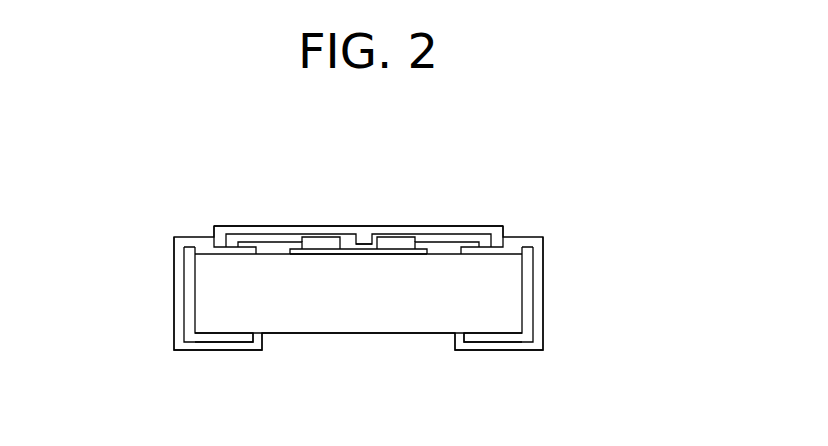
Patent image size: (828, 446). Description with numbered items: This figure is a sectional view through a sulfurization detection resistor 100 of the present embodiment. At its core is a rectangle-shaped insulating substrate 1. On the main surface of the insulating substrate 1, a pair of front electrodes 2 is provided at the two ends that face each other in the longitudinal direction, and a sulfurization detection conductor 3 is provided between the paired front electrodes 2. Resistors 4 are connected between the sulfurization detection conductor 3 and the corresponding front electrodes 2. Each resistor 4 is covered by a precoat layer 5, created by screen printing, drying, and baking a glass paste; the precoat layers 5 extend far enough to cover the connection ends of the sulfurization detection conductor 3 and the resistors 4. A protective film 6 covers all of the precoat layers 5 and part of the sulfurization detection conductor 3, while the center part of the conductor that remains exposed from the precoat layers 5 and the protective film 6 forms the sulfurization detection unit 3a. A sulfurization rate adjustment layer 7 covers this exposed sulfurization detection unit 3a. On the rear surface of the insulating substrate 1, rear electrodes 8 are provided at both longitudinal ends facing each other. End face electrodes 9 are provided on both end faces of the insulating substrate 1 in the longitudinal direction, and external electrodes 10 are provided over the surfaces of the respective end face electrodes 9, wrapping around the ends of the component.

The insulating substrate 1 is at (405, 323).
The front electrode 2 is at (213, 243).
The sulfurization detection conductor 3 is at (343, 254).
The sulfurization detection unit 3a is at (357, 244).
The resistor 4 is at (265, 249).
The precoat layer 5 is at (323, 237).
The protective film 6 is at (297, 228).
The sulfurization rate adjustment layer 7 is at (372, 240).
The rear electrode 8 is at (223, 338).
The end face electrode 9 is at (189, 287).
The external electrode 10 is at (179, 310).
The sulfurization detection resistor 100 is at (552, 227).